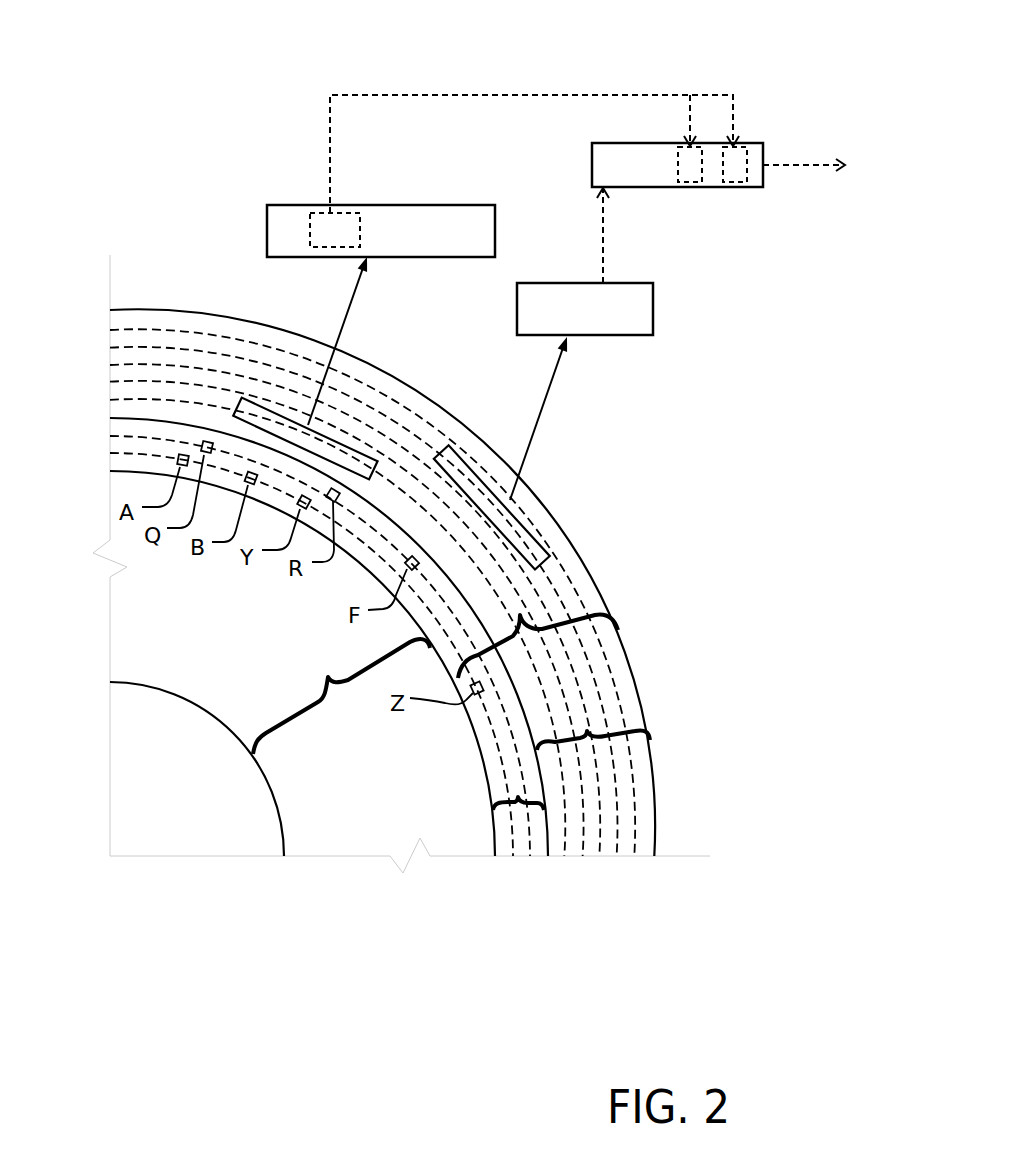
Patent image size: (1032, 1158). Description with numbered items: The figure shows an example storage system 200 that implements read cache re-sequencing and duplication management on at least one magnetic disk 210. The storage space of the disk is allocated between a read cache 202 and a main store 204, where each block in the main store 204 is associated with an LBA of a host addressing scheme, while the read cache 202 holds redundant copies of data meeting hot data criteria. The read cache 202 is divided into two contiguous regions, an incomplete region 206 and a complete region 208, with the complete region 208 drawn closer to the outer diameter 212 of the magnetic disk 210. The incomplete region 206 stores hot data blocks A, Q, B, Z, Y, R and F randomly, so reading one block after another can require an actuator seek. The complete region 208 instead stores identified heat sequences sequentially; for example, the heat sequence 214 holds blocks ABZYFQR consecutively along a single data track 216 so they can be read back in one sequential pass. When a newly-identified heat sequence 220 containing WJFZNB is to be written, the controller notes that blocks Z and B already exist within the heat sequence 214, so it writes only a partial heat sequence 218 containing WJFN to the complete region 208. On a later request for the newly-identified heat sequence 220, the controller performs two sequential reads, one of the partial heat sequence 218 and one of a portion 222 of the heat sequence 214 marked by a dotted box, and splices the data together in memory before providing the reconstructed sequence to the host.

The storage system 200 is at (147, 69).
The read cache 202 is at (523, 615).
The main store 204 is at (328, 677).
The incomplete region 206 is at (518, 799).
The complete region 208 is at (590, 733).
The magnetic disk 210 is at (594, 478).
The outer diameter 212 is at (170, 311).
The heat sequence 214 is at (412, 205).
The data track 216 is at (190, 403).
The partial heat sequence 218 is at (654, 312).
The newly-identified heat sequence 220 is at (763, 145).
The portion of the heat sequence 222 is at (340, 213).